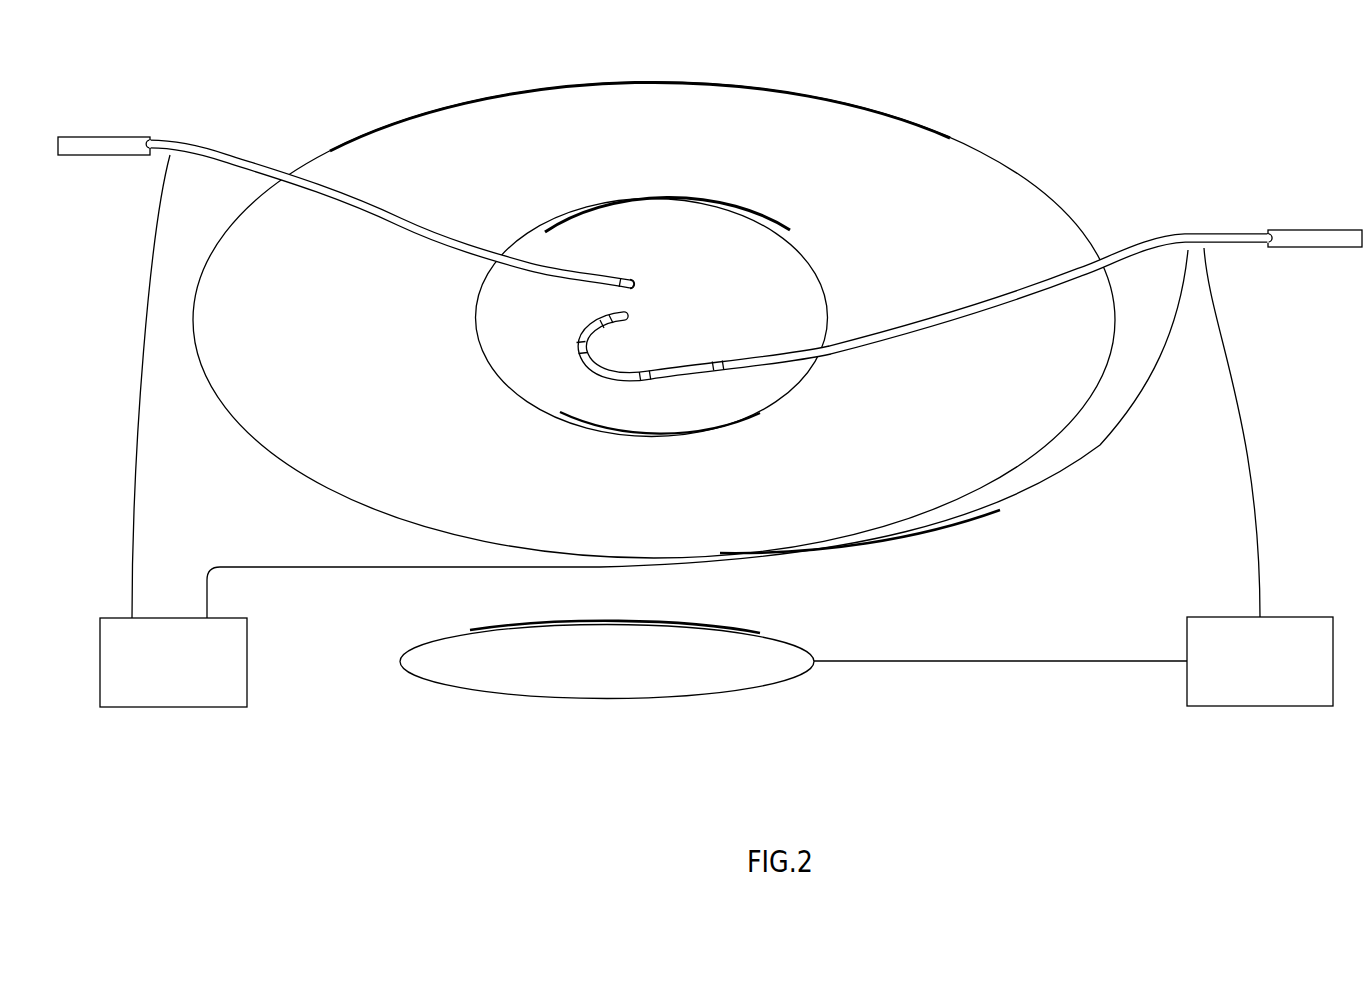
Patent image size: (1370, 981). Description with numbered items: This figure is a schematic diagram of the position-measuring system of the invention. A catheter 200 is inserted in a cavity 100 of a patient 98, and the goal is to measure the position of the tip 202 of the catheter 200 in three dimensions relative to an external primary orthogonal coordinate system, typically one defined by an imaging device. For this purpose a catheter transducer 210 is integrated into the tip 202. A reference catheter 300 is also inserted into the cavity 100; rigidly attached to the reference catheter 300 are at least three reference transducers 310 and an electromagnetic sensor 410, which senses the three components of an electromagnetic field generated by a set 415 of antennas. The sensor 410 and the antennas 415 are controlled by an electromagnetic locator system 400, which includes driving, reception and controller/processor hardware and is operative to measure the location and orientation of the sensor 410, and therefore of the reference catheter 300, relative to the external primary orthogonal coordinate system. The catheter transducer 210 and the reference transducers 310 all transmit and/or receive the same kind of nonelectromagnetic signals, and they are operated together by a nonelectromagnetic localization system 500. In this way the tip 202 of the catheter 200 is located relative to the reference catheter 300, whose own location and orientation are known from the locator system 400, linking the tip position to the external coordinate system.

The patient 98 is at (940, 206).
The cavity 100 is at (784, 279).
The catheter 200 is at (95, 147).
The tip 202 is at (636, 285).
The catheter transducer 210 is at (621, 274).
The reference catheter 300 is at (1293, 237).
The reference transducers 310 is at (602, 322).
The electromagnetic locator system 400 is at (1280, 678).
The electromagnetic sensor 410 is at (718, 371).
The set of antennas 415 is at (628, 675).
The nonelectromagnetic localization system 500 is at (193, 677).